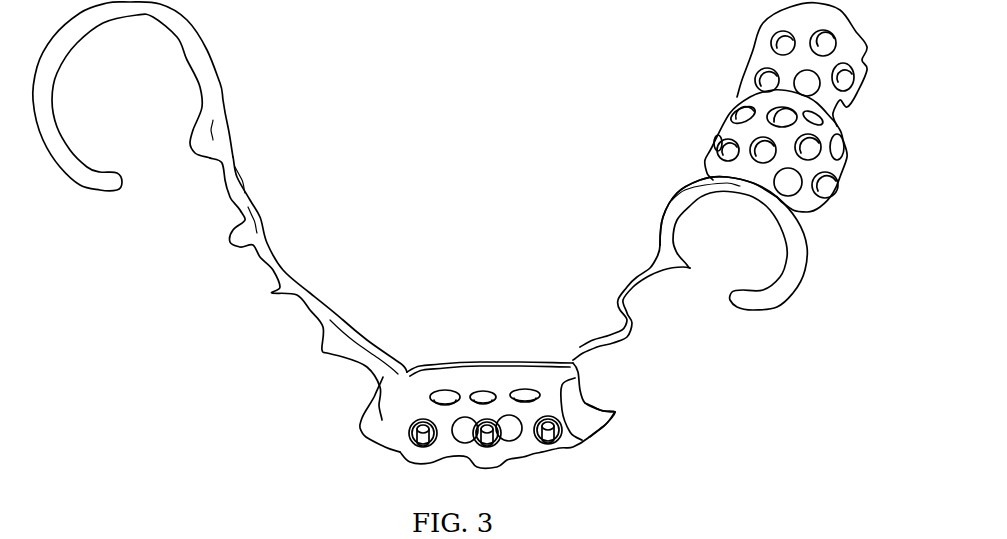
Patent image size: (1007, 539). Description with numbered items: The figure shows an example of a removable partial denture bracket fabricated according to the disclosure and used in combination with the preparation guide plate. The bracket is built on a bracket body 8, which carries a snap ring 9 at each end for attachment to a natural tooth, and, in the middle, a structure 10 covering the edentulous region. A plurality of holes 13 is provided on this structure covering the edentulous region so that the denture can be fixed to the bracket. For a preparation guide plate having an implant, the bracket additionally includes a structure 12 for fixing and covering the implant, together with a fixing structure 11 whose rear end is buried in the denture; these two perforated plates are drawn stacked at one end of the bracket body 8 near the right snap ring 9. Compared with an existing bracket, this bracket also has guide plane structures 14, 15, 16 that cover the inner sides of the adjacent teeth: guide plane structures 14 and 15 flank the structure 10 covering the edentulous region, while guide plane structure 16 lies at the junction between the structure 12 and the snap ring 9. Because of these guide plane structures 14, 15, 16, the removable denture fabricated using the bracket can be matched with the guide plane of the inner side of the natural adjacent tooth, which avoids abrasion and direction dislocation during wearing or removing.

The bracket body 8 is at (288, 260).
The snap ring 9 is at (90, 178).
The structure covering the edentulous region 10 is at (482, 393).
The fixing structure 11 is at (760, 63).
The structure for fixing and covering the implant 12 is at (750, 130).
The holes 13 is at (447, 395).
The guide plane structure 14 is at (370, 410).
The guide plane structure 15 is at (592, 417).
The guide plane structure 16 is at (737, 180).